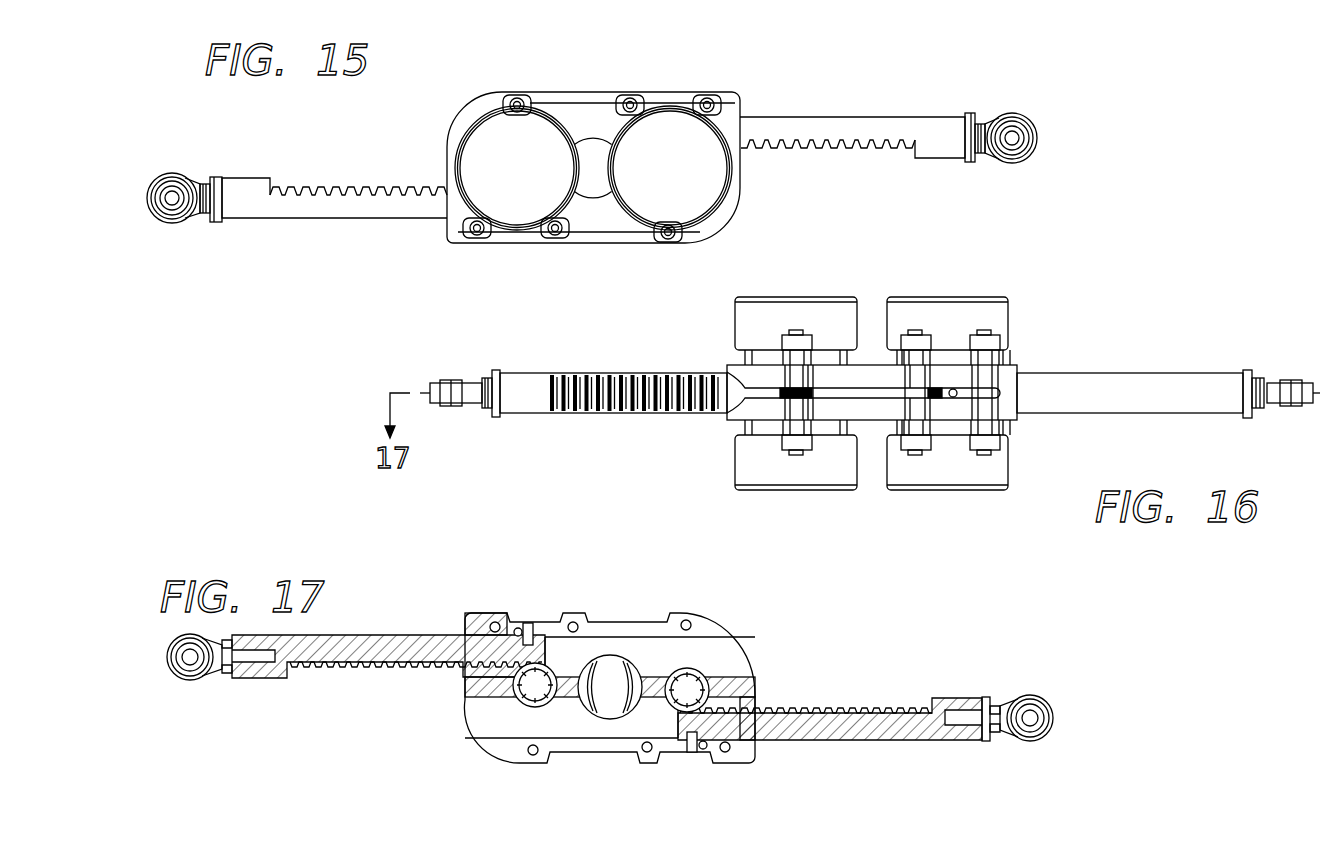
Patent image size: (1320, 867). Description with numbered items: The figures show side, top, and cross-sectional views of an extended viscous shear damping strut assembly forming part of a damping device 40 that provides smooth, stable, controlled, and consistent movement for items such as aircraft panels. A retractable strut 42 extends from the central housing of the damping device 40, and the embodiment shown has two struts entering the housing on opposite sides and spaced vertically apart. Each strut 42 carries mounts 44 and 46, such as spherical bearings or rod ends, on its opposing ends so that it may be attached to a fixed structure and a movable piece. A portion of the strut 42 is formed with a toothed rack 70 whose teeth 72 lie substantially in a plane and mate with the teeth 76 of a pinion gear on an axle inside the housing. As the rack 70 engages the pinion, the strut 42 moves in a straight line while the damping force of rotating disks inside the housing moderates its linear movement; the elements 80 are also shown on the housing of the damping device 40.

In FIG. 15, the damping device 40 is at (729, 80).
In FIG. 16, the damping device 40 is at (985, 330).
In FIG. 17, the damping device 40 is at (727, 606).
In FIG. 15, the strut 42 is at (267, 222).
In FIG. 16, the strut 42 is at (527, 415).
In FIG. 17, the strut 42 is at (380, 634).
In FIG. 15, the mount 44 is at (172, 176).
In FIG. 16, the mount 44 is at (452, 382).
In FIG. 17, the mount 44 is at (188, 680).
In FIG. 15, the mount 46 is at (1010, 113).
In FIG. 16, the mount 46 is at (1288, 382).
In FIG. 17, the mount 46 is at (1032, 696).
In FIG. 15, the toothed rack 70 is at (303, 186).
In FIG. 17, the toothed rack 70 is at (310, 668).
In FIG. 15, the teeth 72 is at (368, 190).
In FIG. 17, the teeth 72 is at (370, 668).
In FIG. 17, the teeth 76 is at (682, 665).
In FIG. 15, the bearing block 80 is at (519, 181).
In FIG. 16, the bearing block 80 is at (752, 297).